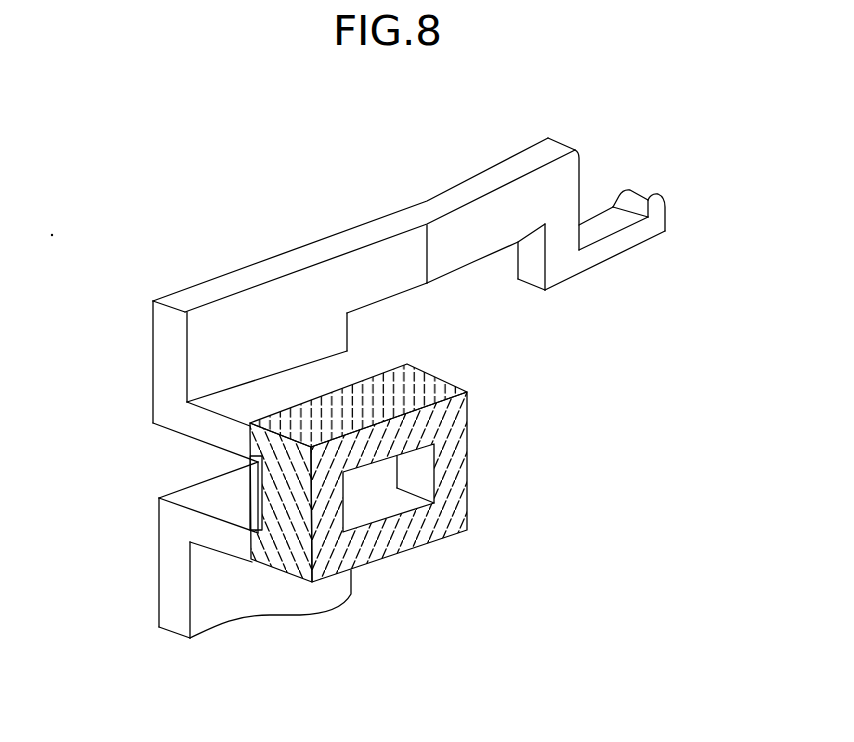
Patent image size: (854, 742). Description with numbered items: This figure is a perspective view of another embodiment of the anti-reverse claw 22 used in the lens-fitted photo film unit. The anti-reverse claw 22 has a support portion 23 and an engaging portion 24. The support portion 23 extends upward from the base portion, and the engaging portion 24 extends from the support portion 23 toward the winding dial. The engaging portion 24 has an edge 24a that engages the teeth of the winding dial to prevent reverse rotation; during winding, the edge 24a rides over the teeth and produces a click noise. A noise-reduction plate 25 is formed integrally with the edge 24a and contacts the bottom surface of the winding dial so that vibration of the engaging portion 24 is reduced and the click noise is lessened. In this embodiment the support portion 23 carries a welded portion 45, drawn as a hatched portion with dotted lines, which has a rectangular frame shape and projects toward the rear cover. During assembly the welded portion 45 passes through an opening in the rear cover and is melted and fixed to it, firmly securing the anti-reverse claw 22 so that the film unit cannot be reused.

The anti-reverse claw 22 is at (272, 254).
The support portion 23 is at (158, 518).
The engaging portion 24 is at (478, 176).
The edge 24a is at (550, 137).
The noise-reduction plate 25 is at (650, 241).
The welded portion 45 is at (470, 428).